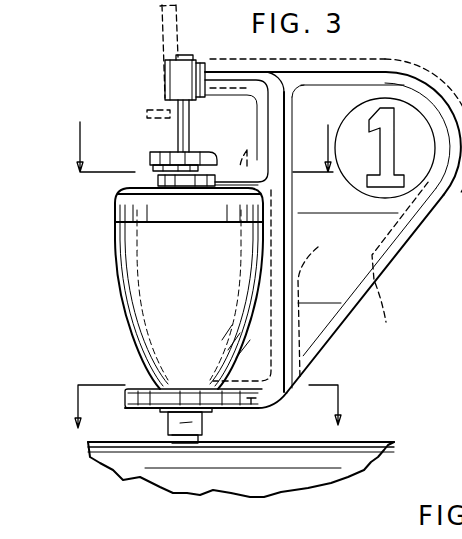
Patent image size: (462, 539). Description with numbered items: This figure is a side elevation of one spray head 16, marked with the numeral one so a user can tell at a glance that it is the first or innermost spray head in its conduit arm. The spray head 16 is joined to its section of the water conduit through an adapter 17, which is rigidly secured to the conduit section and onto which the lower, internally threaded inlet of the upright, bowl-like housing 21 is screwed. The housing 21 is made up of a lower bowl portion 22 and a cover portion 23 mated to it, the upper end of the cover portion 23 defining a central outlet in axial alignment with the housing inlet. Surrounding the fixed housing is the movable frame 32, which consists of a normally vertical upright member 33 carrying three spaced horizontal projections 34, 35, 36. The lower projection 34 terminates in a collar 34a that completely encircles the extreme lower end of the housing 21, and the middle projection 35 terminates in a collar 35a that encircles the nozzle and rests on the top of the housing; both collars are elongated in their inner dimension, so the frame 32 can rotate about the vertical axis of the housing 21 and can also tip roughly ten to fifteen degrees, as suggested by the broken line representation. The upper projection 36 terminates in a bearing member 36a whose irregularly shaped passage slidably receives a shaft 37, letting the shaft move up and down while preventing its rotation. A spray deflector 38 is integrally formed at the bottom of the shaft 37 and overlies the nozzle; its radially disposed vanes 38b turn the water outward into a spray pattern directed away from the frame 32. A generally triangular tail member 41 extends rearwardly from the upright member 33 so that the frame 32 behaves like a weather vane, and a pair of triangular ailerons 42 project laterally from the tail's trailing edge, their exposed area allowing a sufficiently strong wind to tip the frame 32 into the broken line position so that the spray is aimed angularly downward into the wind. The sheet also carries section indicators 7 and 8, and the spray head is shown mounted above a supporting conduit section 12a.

The support base plate 12a is at (264, 487).
The spray head 16 is at (100, 205).
The adapter 17 is at (166, 427).
The housing 21 is at (112, 282).
The lower bowl portion 22 is at (125, 293).
The cover portion 23 is at (115, 213).
The frame 32 is at (457, 100).
The upright member 33 is at (286, 258).
The projection 34 is at (243, 402).
The collar 34a is at (134, 389).
The projection 35 is at (242, 160).
The collar 35a is at (156, 181).
The projection 36 is at (246, 72).
The bearing member 36a is at (165, 66).
The shaft 37 is at (160, 16).
The spray deflector 38 is at (152, 102).
The vanes 38b is at (147, 114).
The tail member 41 is at (372, 72).
The ailerons 42 is at (360, 302).
The section line 7- 7 is at (206, 136).
The section line 8- 8 is at (206, 407).